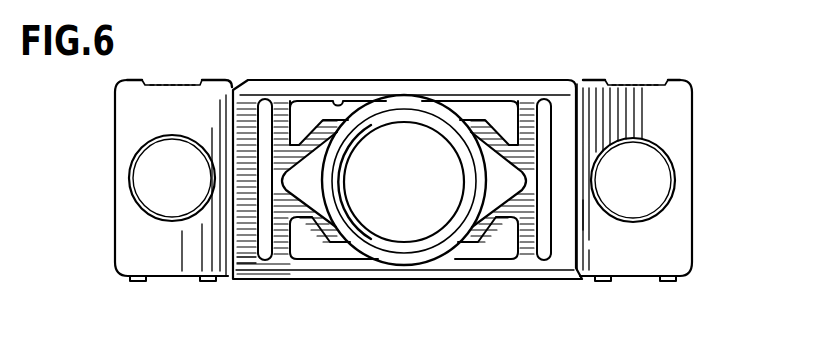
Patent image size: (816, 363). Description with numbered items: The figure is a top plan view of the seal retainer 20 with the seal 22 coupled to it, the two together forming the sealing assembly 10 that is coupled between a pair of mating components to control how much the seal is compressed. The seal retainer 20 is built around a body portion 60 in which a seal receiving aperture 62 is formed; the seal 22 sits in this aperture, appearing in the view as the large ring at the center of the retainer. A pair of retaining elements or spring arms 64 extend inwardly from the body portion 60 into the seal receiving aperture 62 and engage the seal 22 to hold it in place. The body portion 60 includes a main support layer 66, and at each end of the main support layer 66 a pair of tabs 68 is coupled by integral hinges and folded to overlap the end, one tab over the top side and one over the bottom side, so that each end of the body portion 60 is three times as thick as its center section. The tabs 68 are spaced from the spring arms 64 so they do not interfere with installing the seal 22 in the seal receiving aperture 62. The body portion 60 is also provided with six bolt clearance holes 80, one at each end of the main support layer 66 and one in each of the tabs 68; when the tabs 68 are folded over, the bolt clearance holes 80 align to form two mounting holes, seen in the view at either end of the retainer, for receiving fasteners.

The sealing assembly 10 is at (701, 72).
The seal retainer 20 is at (502, 78).
The seal 22 is at (389, 248).
The body portion 60 is at (252, 103).
The seal receiving aperture 62 is at (358, 97).
The spring arms 64 is at (326, 242).
The main support layer 66 is at (247, 262).
The tabs 68 is at (128, 255).
The bolt clearance holes 80 is at (207, 158).